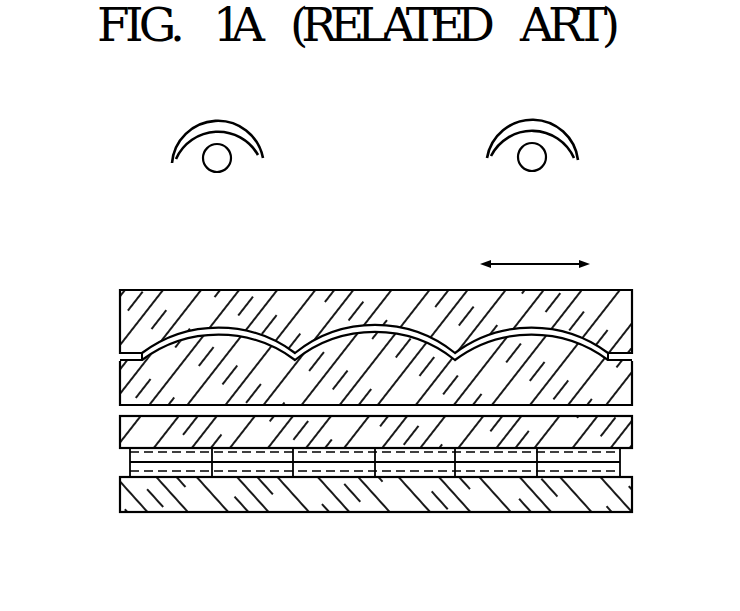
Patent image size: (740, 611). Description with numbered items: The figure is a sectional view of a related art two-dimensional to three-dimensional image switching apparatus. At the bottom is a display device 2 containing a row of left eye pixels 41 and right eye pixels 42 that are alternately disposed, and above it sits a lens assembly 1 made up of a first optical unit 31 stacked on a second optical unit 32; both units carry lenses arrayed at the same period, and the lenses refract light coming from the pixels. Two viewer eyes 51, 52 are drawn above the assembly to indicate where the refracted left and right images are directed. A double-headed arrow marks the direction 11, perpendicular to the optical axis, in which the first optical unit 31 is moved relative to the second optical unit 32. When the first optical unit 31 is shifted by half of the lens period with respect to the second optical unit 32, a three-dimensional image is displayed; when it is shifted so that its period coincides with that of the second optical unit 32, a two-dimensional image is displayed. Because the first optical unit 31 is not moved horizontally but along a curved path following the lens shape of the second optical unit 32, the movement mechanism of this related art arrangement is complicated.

The lens sheet 1 is at (346, 306).
The display device 2 is at (333, 490).
The direction 11 is at (535, 262).
The first optical unit 31 is at (137, 320).
The second optical unit 32 is at (137, 380).
The left eye pixels 41 is at (172, 463).
The right eye pixels 42 is at (253, 463).
The left eye 51 is at (177, 150).
The right eye 52 is at (573, 142).